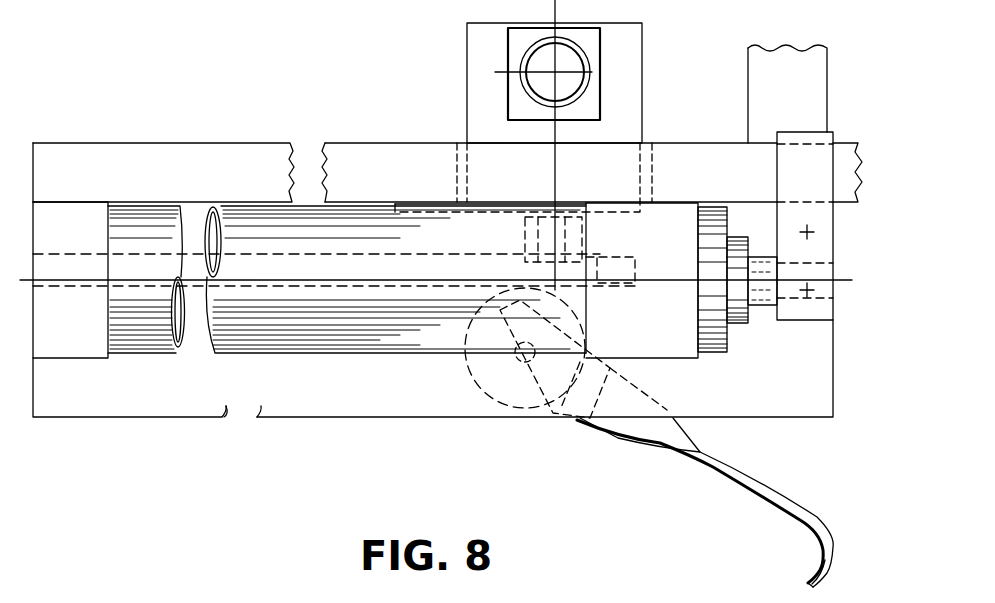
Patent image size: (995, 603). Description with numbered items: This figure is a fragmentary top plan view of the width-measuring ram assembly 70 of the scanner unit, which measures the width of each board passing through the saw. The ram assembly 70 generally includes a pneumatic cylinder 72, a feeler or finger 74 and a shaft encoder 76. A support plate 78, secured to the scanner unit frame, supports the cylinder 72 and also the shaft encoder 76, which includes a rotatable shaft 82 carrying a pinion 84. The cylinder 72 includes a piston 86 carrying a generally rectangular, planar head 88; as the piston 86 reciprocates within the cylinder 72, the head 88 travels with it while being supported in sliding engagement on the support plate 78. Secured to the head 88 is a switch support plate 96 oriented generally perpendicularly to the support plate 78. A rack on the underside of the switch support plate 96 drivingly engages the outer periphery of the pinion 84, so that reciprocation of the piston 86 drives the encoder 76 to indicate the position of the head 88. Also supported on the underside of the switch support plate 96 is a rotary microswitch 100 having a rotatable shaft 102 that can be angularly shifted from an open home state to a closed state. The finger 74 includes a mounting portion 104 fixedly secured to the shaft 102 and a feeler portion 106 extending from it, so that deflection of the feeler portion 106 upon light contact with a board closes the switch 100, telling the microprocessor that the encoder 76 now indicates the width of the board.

The ram assembly 70 is at (165, 92).
The pneumatic cylinder 72 is at (313, 355).
The finger 74 is at (823, 517).
The shaft encoder 76 is at (643, 50).
The support plate 78 is at (184, 158).
The rotatable shaft 82 is at (597, 242).
The pinion 84 is at (497, 267).
The piston 86 is at (760, 298).
The head 88 is at (835, 253).
The switch support plate 96 is at (418, 407).
The rotary microswitch 100 is at (487, 418).
The rotatable shaft 102 is at (460, 347).
The mounting portion 104 is at (543, 430).
The feeler portion 106 is at (827, 558).